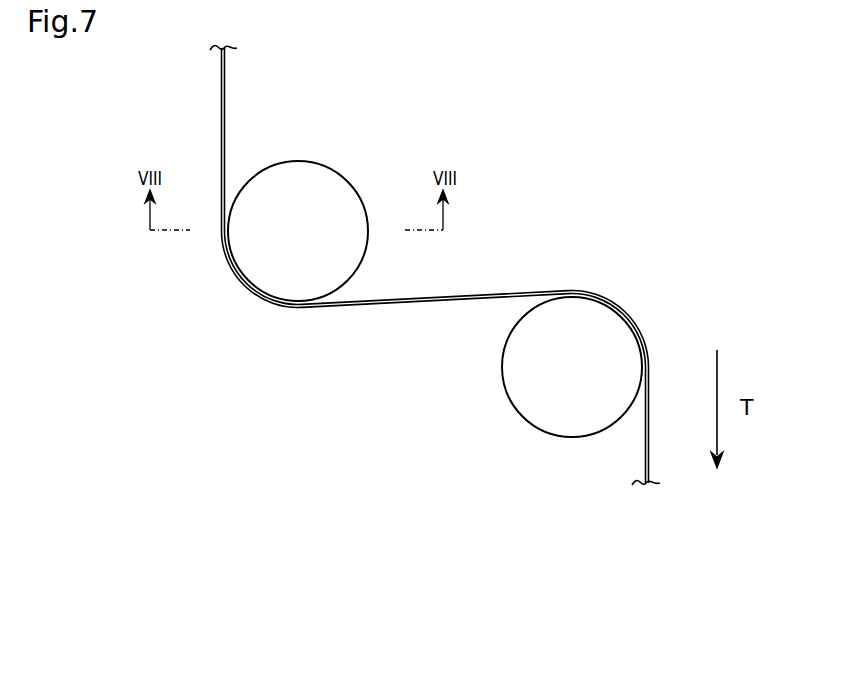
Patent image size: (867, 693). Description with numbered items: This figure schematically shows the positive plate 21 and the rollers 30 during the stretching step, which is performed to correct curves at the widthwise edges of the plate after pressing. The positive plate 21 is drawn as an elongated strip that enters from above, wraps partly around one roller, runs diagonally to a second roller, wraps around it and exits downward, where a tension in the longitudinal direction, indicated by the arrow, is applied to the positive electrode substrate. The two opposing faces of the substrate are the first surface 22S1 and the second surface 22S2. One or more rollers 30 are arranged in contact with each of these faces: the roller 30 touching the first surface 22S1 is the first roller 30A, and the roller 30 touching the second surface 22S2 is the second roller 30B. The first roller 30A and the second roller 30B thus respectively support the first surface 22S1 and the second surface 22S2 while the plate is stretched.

The positive plate 21 is at (412, 265).
The first surface 22S1 is at (463, 295).
The second surface 22S2 is at (402, 305).
The roller 30 is at (435, 297).
The first roller 30A is at (311, 183).
The second roller 30B is at (510, 394).